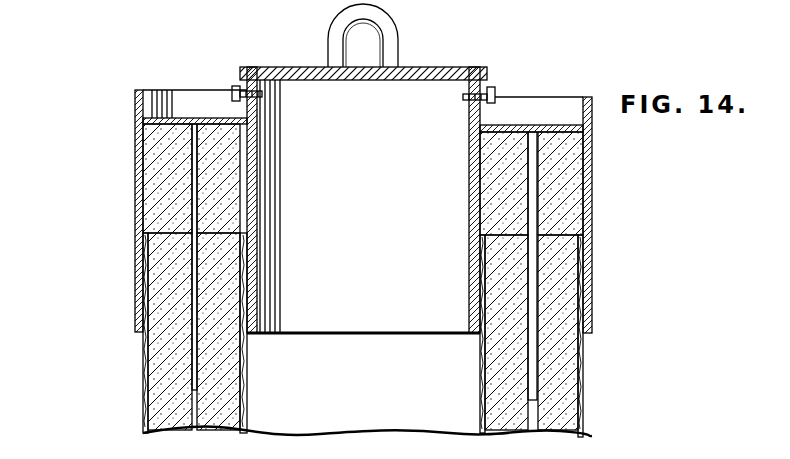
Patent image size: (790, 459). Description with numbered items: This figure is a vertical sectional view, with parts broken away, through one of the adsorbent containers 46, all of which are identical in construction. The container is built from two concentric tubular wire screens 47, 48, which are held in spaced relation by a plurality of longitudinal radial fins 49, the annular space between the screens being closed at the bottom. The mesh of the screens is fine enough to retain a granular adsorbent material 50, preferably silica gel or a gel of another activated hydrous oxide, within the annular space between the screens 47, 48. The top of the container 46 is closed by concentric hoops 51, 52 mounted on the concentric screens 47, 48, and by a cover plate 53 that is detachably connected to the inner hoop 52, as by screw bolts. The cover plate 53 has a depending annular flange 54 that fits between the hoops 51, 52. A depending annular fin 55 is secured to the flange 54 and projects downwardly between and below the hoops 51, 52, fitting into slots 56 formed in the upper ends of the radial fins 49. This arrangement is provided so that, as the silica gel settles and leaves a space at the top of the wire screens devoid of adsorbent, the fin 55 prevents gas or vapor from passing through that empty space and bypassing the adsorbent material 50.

The adsorbent container 46 is at (122, 336).
The outer tubular wire screen 47 is at (142, 387).
The inner tubular wire screen 48 is at (247, 407).
The longitudinal radial fin 49 is at (565, 352).
The granular adsorbent material 50 is at (540, 413).
The outer hoop 51 is at (140, 200).
The inner hoop 52 is at (250, 197).
The cover plate 53 is at (405, 82).
The depending annular flange 54 is at (158, 134).
The depending annular fin 55 is at (190, 173).
The slot 56 is at (578, 284).